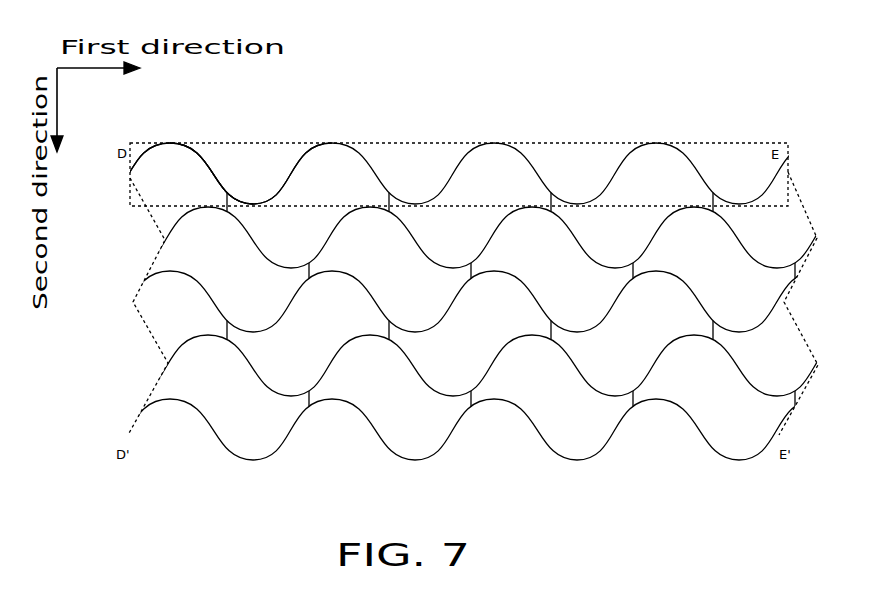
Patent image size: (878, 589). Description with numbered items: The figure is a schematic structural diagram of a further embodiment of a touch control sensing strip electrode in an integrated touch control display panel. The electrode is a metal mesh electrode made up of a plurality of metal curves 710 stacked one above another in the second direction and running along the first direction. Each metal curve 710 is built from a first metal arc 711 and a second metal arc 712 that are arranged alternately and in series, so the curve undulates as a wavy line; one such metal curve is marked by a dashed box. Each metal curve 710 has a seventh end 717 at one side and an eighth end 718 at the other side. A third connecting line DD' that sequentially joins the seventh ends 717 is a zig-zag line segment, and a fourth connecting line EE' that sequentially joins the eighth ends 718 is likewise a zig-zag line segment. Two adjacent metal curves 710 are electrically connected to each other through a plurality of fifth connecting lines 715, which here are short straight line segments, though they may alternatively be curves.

The metal curve 710 is at (484, 143).
The first metal arc 711 is at (201, 150).
The second metal arc 712 is at (231, 198).
The fifth connecting line 715 is at (226, 200).
The seventh end 717 is at (130, 177).
The eighth end 718 is at (788, 172).